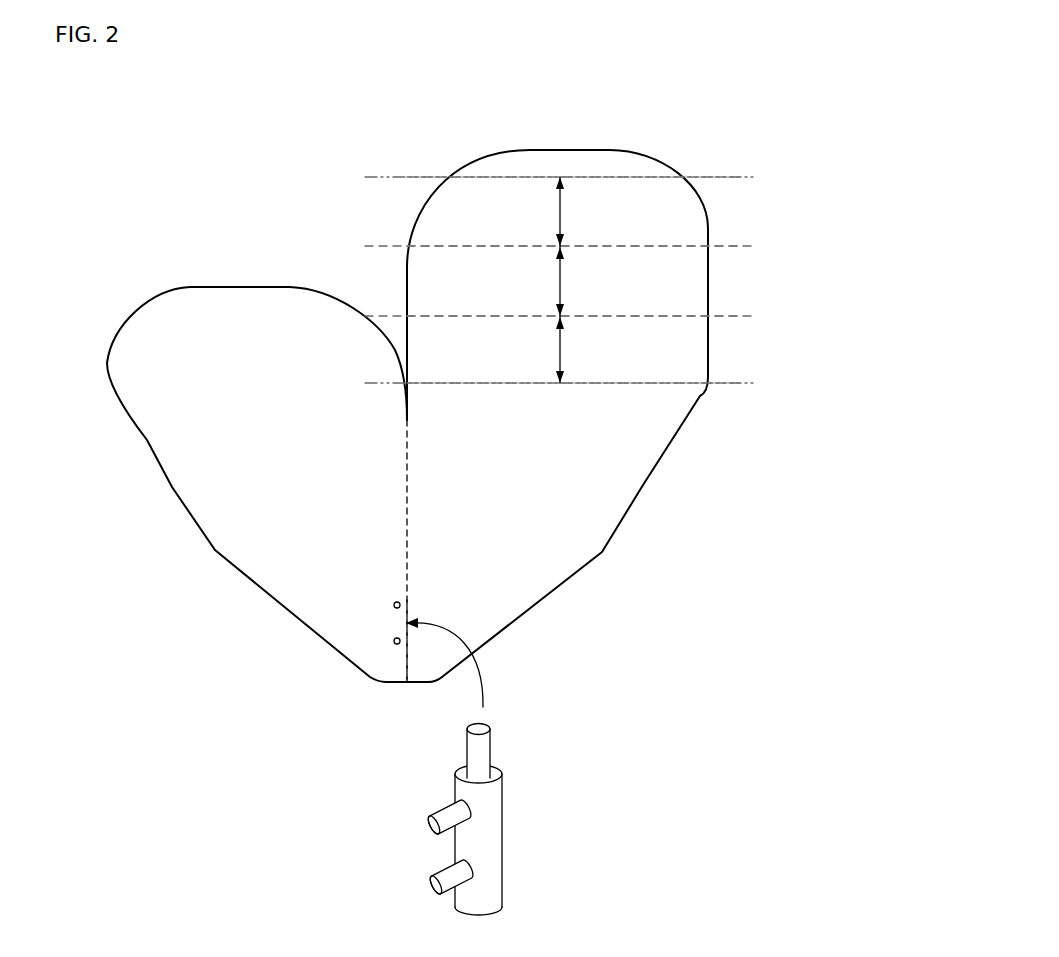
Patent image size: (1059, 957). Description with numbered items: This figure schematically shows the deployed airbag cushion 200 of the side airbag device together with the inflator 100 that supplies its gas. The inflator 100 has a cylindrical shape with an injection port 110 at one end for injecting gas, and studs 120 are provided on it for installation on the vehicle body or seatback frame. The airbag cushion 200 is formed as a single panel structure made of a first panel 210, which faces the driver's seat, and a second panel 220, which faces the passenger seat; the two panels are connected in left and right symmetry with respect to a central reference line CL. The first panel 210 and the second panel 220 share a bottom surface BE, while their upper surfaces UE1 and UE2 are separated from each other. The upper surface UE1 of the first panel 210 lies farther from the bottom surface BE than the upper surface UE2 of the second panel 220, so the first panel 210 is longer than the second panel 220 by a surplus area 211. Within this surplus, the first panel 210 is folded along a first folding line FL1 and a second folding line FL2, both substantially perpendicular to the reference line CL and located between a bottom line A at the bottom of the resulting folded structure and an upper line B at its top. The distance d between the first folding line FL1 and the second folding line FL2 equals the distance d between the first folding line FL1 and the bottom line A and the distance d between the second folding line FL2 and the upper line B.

The airbag cushion 200 is at (130, 98).
The first panel 210 is at (628, 438).
The surplus area 211 is at (377, 177).
The second panel 220 is at (167, 426).
The inflator 100 is at (490, 835).
The injection port 110 is at (487, 742).
The studs 120 is at (432, 881).
The upper surface of the first panel UE1 is at (573, 150).
The upper surface of the second panel UE2 is at (233, 287).
The upper line B is at (748, 176).
The bottom line A is at (748, 382).
The first folding line FL1 is at (748, 315).
The second folding line FL2 is at (748, 245).
The distance d is at (568, 280).
The central reference line CL is at (407, 658).
The bottom surface BE is at (402, 684).